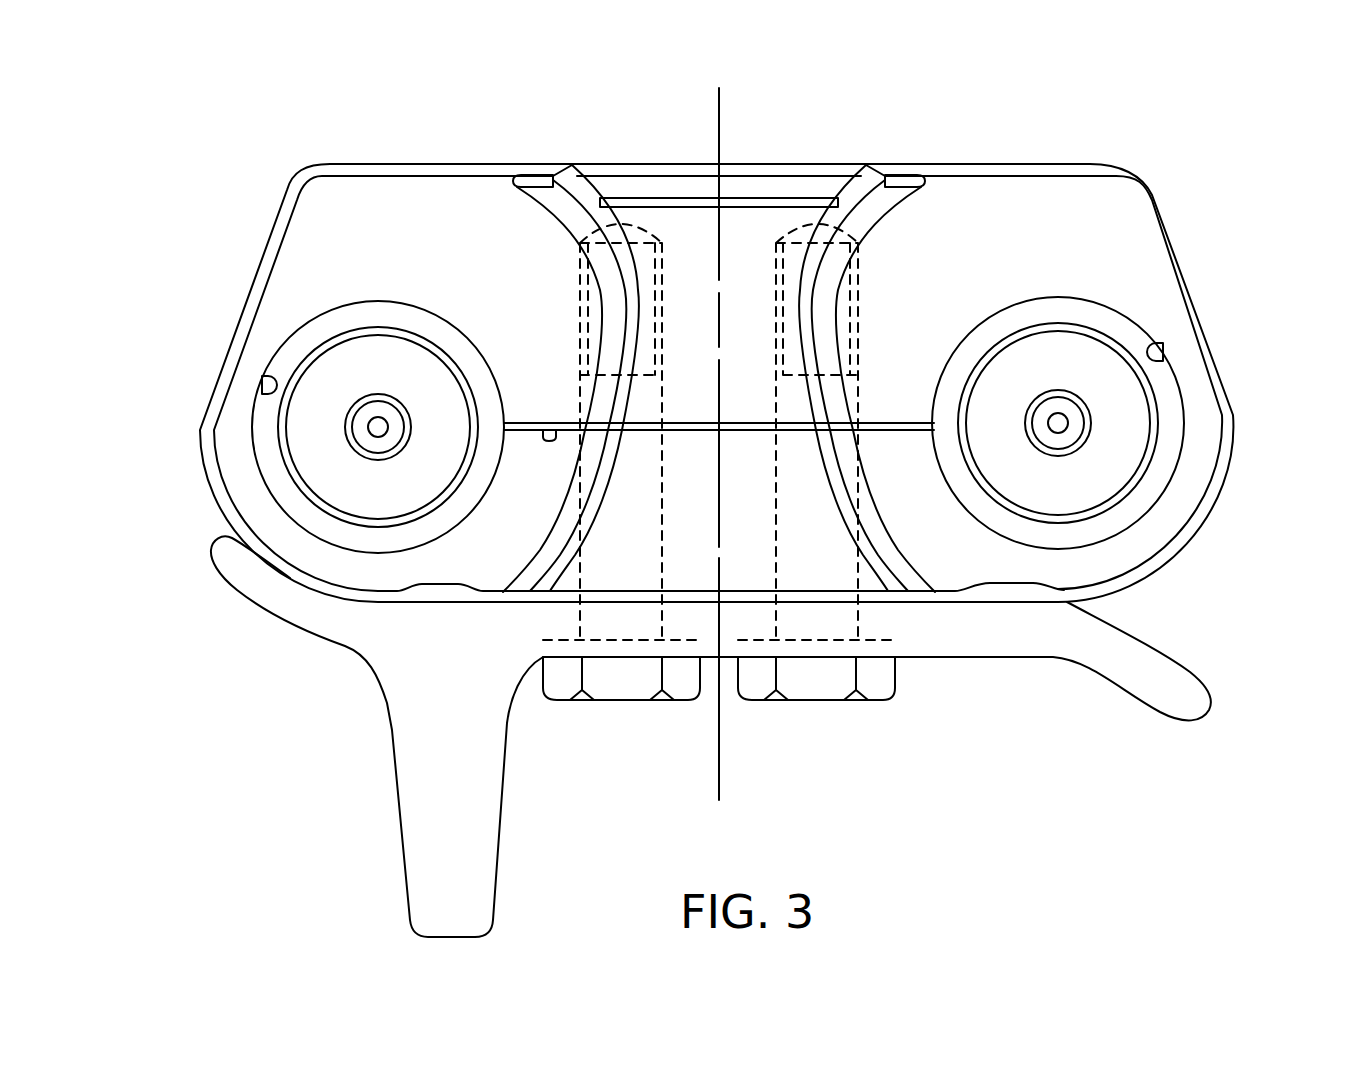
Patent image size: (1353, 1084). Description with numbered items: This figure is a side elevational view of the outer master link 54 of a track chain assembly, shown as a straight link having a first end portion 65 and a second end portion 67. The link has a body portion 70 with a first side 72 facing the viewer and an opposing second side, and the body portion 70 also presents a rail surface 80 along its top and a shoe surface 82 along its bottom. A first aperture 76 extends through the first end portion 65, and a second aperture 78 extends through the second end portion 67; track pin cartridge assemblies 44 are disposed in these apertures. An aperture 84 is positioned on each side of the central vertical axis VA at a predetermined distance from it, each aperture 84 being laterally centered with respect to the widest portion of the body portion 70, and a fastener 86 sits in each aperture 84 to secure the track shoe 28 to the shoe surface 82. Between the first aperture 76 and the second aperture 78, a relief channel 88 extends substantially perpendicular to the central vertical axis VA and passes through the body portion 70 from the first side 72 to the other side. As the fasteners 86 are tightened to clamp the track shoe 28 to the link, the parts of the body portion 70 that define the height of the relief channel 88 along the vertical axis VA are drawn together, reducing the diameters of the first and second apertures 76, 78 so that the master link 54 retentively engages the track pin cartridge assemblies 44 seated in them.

The track shoe 28 is at (388, 713).
The track pin cartridge assembly 44 is at (352, 365).
The outer master link 54 is at (1168, 222).
The first end portion 65 is at (237, 443).
The second end portion 67 is at (1202, 387).
The body portion 70 is at (1084, 188).
The first side 72 is at (992, 226).
The first aperture 76 is at (262, 382).
The second aperture 78 is at (1163, 360).
The rail surface 80 is at (953, 164).
The shoe surface 82 is at (707, 604).
The aperture 84 is at (580, 621).
The fastener 86 is at (615, 703).
The relief channel 88 is at (543, 421).
The central vertical axis VA is at (722, 138).